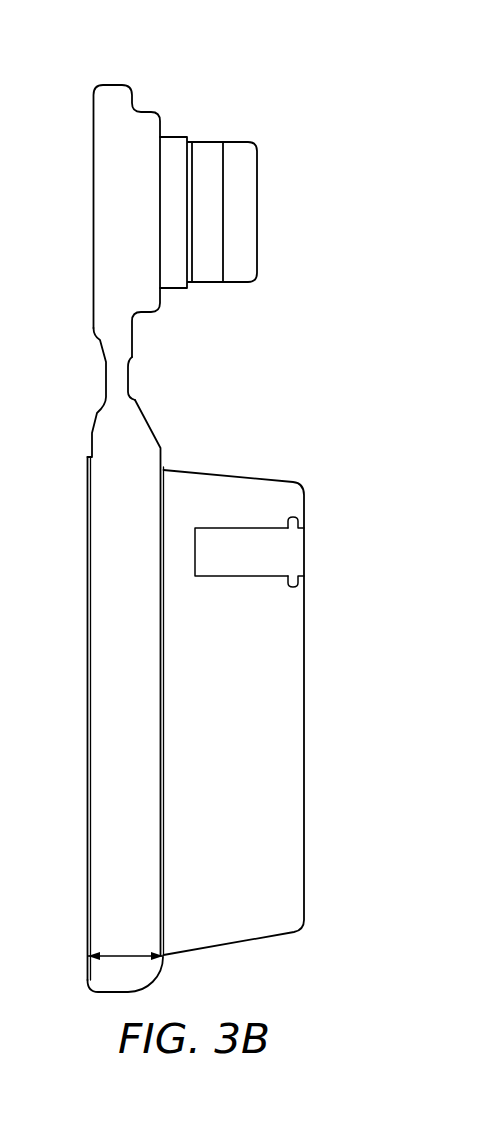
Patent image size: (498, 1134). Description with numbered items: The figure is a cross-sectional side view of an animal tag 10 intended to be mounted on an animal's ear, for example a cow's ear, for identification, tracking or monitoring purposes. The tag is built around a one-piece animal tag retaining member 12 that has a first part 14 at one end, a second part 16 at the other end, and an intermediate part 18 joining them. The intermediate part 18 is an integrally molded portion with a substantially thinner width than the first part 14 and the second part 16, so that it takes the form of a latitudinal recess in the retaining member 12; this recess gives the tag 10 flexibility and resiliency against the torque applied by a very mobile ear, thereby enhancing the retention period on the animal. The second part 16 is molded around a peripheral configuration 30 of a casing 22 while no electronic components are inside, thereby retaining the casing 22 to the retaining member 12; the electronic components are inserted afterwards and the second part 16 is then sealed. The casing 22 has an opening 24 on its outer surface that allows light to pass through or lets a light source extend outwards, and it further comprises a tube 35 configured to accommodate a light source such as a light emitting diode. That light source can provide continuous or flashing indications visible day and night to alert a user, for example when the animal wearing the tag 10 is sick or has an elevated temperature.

The animal tag 10 is at (284, 75).
The one-piece animal tag retaining member 12 is at (150, 973).
The first part 14 is at (133, 207).
The second part 16 is at (152, 450).
The intermediate part 18 is at (120, 383).
The casing 22 is at (260, 488).
The opening 24 is at (304, 544).
The peripheral configuration 30 is at (110, 953).
The tube 35 is at (275, 565).